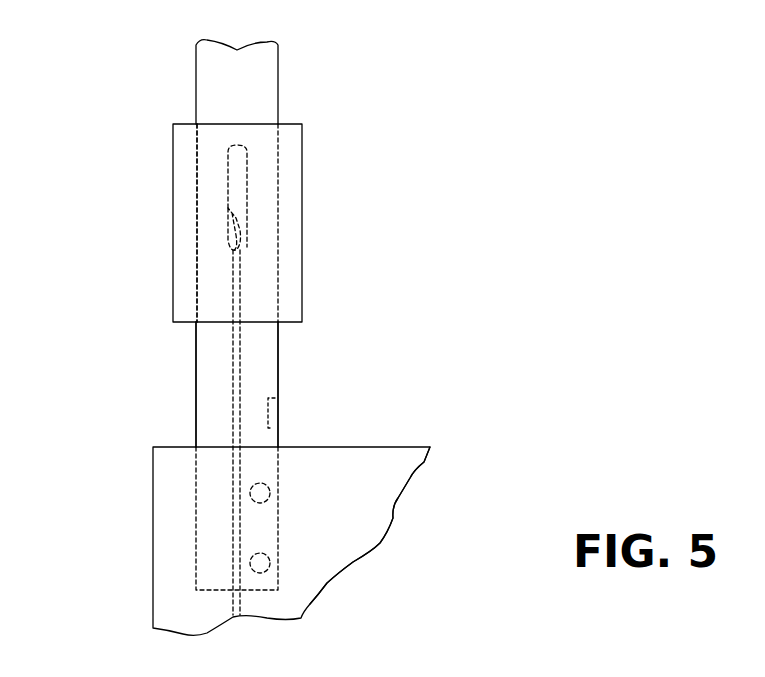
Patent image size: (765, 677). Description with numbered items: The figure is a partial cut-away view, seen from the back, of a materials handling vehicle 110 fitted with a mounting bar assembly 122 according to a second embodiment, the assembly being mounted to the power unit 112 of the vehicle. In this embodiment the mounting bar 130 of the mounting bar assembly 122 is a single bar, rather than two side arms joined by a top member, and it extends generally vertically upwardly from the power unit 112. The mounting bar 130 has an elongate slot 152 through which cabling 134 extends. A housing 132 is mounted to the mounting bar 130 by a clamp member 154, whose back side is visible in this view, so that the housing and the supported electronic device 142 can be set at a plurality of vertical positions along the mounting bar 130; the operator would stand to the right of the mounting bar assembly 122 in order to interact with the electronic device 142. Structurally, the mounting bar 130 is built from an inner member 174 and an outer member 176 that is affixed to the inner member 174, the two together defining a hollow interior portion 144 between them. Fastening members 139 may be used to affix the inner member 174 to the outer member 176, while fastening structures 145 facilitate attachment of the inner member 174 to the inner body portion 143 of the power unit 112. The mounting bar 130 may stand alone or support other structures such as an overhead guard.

The vehicle 110 is at (289, 331).
The power unit 112 is at (177, 505).
The mounting bar assembly 122 is at (312, 232).
The mounting bar 130 is at (217, 409).
The housing 132 is at (329, 223).
The cabling 134 is at (236, 355).
The fastening members 139 is at (276, 397).
The electronic device 142 is at (305, 253).
The inner body portion 143 is at (310, 568).
The hollow interior portion 144 is at (237, 42).
The fastening structures 145 is at (272, 495).
The elongate slot 152 is at (243, 150).
The clamp member 154 is at (193, 294).
The inner member 174 is at (253, 478).
The outer member 176 is at (260, 360).